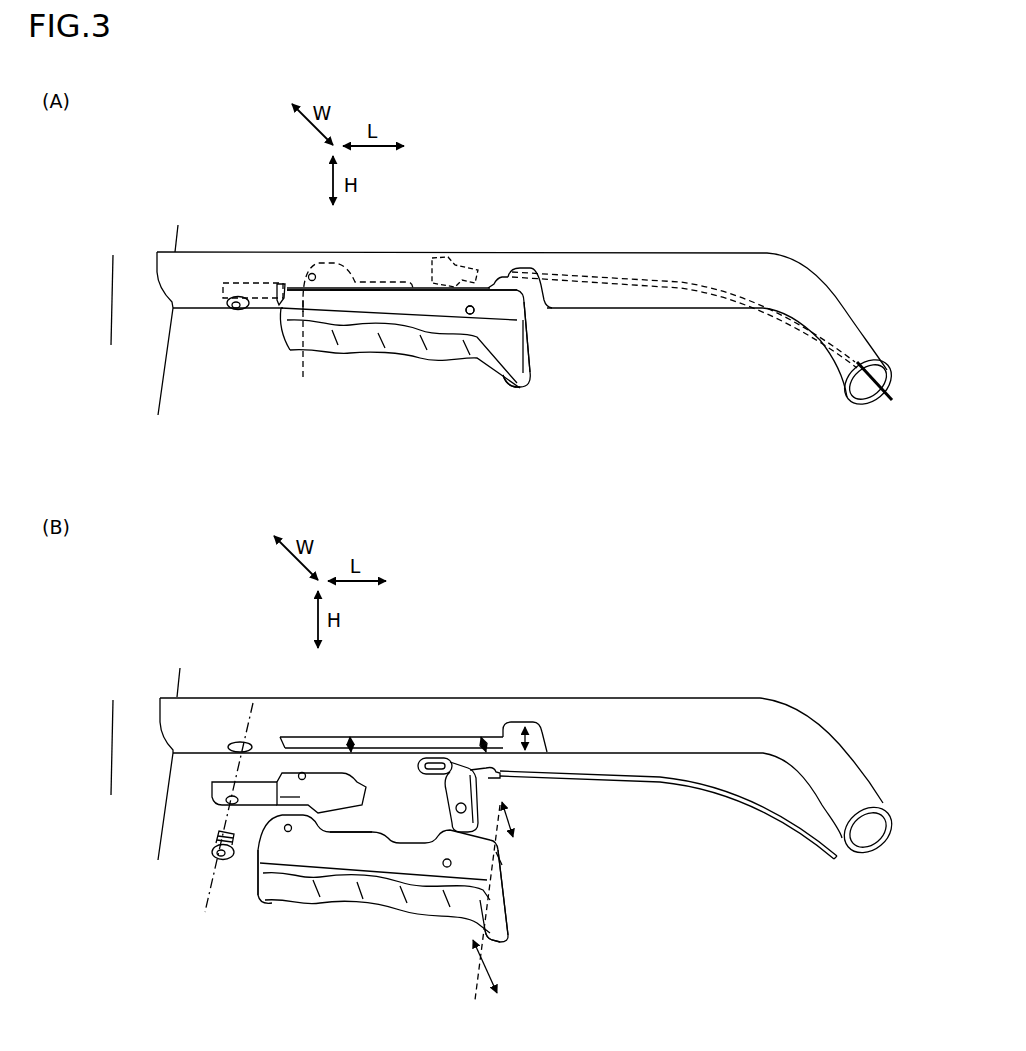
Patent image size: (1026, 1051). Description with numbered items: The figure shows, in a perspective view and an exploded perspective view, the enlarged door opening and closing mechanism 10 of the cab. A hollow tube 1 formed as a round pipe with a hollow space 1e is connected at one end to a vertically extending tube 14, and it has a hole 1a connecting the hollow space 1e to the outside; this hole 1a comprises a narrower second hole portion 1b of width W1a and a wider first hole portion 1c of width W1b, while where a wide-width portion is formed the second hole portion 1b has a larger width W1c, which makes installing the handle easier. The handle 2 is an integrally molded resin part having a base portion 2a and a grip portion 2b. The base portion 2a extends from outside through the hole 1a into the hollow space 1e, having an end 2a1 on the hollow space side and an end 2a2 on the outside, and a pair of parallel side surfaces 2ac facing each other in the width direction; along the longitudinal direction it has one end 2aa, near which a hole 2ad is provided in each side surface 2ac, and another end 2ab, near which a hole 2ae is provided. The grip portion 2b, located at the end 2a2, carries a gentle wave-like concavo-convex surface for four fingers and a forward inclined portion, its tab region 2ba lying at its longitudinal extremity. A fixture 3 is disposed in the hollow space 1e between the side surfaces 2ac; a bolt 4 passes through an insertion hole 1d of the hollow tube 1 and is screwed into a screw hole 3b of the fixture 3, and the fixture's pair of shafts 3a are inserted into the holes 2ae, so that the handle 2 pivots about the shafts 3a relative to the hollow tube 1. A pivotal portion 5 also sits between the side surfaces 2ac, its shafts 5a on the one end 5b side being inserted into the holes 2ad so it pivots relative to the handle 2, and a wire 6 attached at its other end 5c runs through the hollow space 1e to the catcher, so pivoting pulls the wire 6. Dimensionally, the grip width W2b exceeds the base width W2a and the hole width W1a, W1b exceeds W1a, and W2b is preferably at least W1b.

The hollow tube 1 is at (628, 262).
The hole 1a is at (420, 461).
The second hole portion 1b is at (491, 287).
The first hole portion 1c is at (492, 198).
The insertion hole 1d is at (240, 741).
The hollow space 1e is at (860, 392).
The handle 2 is at (412, 609).
The base portion 2a is at (367, 303).
The end on the hollow space side 2a1 is at (390, 270).
The end on the outside 2a2 is at (435, 320).
The one end 2aa is at (520, 323).
The other end 2ab is at (280, 302).
The side surfaces 2ac is at (358, 298).
The hole 2ad is at (470, 314).
The hole 2ae is at (303, 377).
The grip portion 2b is at (397, 347).
The tab of hanger portion 2ba is at (523, 323).
The fixture 3 is at (252, 272).
The shafts 3a is at (313, 270).
The screw hole 3b is at (225, 802).
The bolt 4 is at (228, 312).
The pivotal portion 5 is at (437, 262).
The shafts 5a is at (470, 306).
The one end 5b is at (475, 830).
The other end 5c is at (430, 762).
The wire 6 is at (697, 290).
The door opening and closing mechanism 10 is at (568, 337).
The tube 14 is at (122, 310).
The dimension of second hole portion W1a is at (476, 744).
The dimension of first hole portion W1b is at (533, 747).
The dimension of second hole portion with wide-width portion W1c is at (337, 733).
The dimension of base portion W2a is at (513, 824).
The dimension of grip portion W2b is at (478, 968).